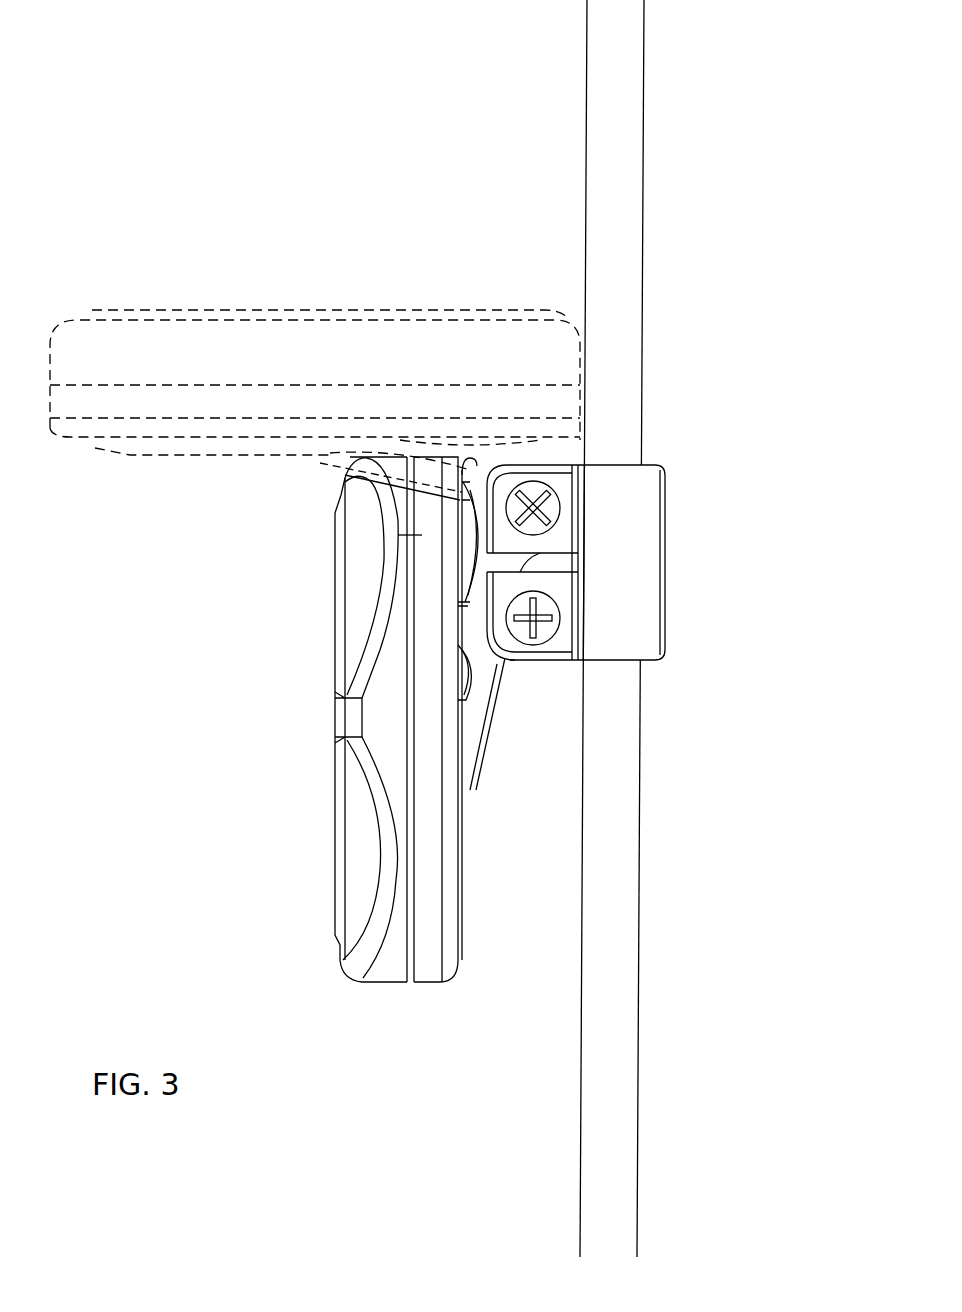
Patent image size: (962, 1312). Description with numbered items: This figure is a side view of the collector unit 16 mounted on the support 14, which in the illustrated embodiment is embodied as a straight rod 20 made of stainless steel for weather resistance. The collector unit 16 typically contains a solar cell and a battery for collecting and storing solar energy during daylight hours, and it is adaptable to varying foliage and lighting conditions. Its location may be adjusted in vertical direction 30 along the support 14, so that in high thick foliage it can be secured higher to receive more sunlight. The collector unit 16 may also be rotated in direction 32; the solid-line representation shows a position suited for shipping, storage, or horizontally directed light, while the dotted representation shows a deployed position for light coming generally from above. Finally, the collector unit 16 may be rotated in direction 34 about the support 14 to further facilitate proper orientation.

The support 14 is at (668, 324).
The collector unit 16 is at (247, 569).
The straight rod 20 is at (630, 386).
The vertical direction 30 is at (738, 702).
The direction of rotation 32 is at (190, 715).
The direction of rotation about the support 34 is at (504, 229).